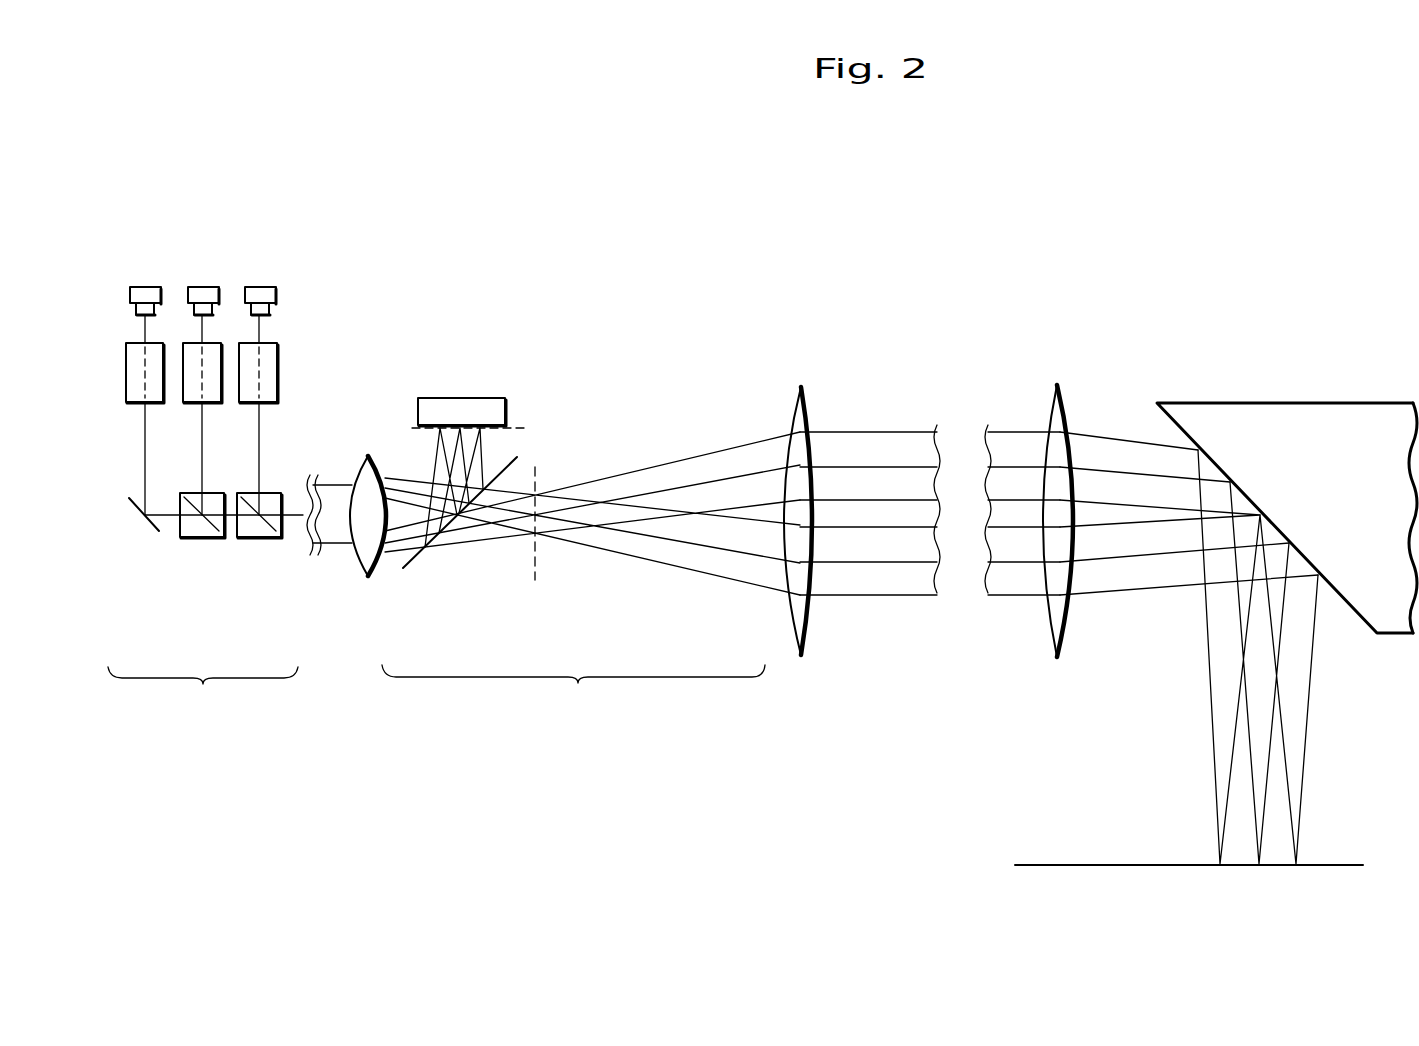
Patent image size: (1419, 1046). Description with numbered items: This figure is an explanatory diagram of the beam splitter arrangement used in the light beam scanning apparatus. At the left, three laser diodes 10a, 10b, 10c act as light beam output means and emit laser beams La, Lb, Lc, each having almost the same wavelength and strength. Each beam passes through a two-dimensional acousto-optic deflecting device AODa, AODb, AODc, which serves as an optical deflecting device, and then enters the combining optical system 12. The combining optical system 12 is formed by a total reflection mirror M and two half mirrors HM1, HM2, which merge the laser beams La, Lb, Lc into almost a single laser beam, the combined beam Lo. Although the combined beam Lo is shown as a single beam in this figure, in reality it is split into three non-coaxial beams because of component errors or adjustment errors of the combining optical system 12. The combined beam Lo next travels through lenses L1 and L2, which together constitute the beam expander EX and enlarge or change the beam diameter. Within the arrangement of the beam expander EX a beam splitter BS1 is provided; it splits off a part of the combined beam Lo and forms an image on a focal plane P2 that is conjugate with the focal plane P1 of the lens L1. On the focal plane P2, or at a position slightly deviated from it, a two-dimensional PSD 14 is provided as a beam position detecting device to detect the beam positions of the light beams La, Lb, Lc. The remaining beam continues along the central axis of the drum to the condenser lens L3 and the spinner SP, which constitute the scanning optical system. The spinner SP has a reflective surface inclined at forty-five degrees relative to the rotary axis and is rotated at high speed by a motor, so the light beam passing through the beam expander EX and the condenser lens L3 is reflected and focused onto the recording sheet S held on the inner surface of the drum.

The laser diode 10a is at (147, 286).
The laser diode 10b is at (205, 286).
The laser diode 10c is at (265, 286).
The two-dimensional acousto-optic deflecting device AODa is at (164, 355).
The two-dimensional acousto-optic deflecting device AODb is at (222, 360).
The two-dimensional acousto-optic deflecting device AODc is at (278, 360).
The laser beam La is at (146, 460).
The laser beam Lb is at (204, 460).
The laser beam Lc is at (262, 460).
The combined beam Lo is at (295, 500).
The total reflection mirror M is at (150, 532).
The half mirror HM1 is at (200, 538).
The half mirror HM2 is at (265, 538).
The combining optical system 12 is at (203, 695).
The lens L1 is at (381, 577).
The beam splitter BS1 is at (410, 568).
The two-dimensional PSD 14 is at (462, 398).
The focal plane P2 is at (503, 434).
The focal plane P1 is at (537, 475).
The lens L2 is at (787, 636).
The beam expander EX is at (573, 693).
The condenser lens L3 is at (1067, 403).
The spinner SP is at (1338, 402).
The recording sheet S is at (1058, 865).